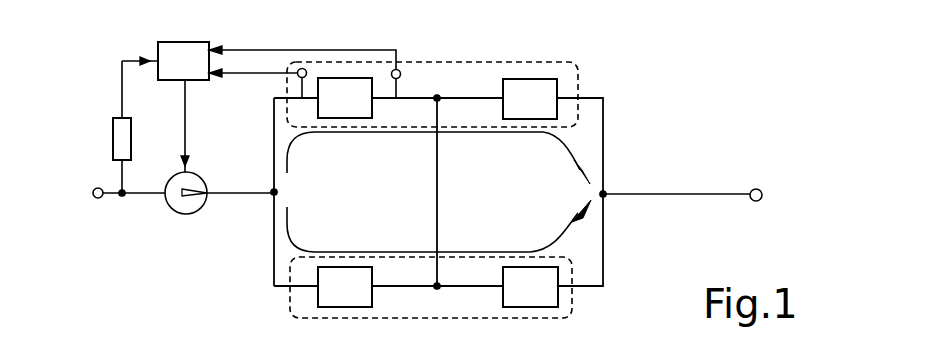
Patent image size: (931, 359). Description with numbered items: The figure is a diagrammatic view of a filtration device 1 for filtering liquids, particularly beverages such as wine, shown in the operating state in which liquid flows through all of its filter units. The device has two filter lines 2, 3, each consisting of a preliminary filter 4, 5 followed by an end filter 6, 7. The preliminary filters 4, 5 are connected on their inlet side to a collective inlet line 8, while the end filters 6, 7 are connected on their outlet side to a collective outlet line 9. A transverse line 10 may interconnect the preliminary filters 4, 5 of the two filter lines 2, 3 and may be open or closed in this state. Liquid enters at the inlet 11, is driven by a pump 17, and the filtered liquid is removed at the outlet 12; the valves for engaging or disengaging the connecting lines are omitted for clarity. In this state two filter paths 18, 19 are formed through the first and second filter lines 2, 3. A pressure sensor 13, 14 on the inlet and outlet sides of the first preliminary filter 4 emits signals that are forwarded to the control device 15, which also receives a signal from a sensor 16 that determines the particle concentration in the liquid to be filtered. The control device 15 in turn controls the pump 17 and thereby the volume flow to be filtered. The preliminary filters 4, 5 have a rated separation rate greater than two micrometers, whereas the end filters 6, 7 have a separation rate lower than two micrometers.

The filtration device 1 is at (711, 154).
The first filter line 2 is at (578, 78).
The second filter line 3 is at (565, 311).
The preliminary filter 4 is at (350, 90).
The preliminary filter 5 is at (343, 288).
The end filter 6 is at (531, 92).
The end filter 7 is at (522, 290).
The collective inlet line 8 is at (271, 258).
The collective outlet line 9 is at (604, 262).
The transverse line 10 is at (437, 208).
The inlet 11 is at (98, 198).
The outlet 12 is at (760, 202).
The pressure sensor 13 is at (298, 77).
The pressure sensor 14 is at (401, 77).
The control device 15 is at (194, 50).
The sensor 16 is at (115, 135).
The pump 17 is at (185, 214).
The filter path 18 is at (565, 147).
The filter path 19 is at (568, 238).